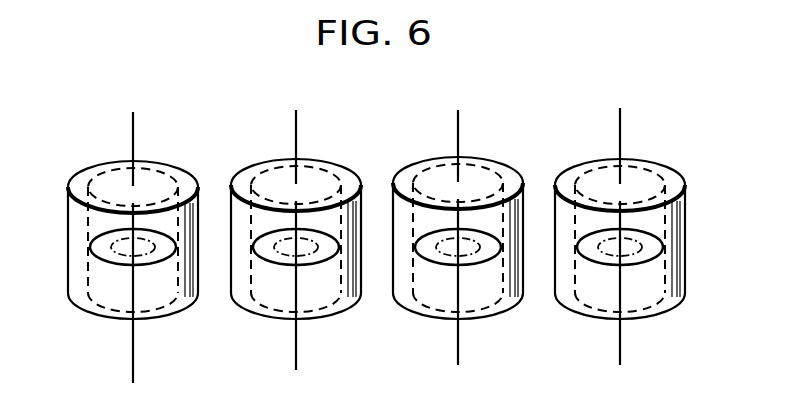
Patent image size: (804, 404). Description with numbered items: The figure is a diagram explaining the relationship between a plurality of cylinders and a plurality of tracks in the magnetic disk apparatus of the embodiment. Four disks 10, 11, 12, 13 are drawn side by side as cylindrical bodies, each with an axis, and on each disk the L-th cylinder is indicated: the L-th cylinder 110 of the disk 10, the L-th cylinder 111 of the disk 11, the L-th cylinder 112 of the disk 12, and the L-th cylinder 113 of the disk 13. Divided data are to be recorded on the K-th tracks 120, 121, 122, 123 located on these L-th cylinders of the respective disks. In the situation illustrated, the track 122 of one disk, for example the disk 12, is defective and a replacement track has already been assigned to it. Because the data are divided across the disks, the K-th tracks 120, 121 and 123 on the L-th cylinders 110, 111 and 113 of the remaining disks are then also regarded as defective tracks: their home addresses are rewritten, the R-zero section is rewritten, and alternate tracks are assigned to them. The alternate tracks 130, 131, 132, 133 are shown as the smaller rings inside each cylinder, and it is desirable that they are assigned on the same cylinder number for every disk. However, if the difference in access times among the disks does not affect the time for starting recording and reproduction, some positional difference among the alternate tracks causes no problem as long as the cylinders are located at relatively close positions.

The disk 10 is at (150, 161).
The disk 11 is at (313, 159).
The disk 12 is at (475, 157).
The disk 13 is at (637, 159).
The L-th cylinder 110 is at (108, 169).
The L-th cylinder 111 is at (271, 167).
The L-th cylinder 112 is at (434, 165).
The L-th cylinder 113 is at (596, 167).
The K-th track 120 is at (108, 263).
The K-th track 121 is at (271, 263).
The K-th track 122 is at (433, 263).
The K-th track 123 is at (595, 263).
The alternate track 130 is at (145, 257).
The alternate track 131 is at (308, 257).
The alternate track 132 is at (470, 257).
The alternate track 133 is at (633, 257).